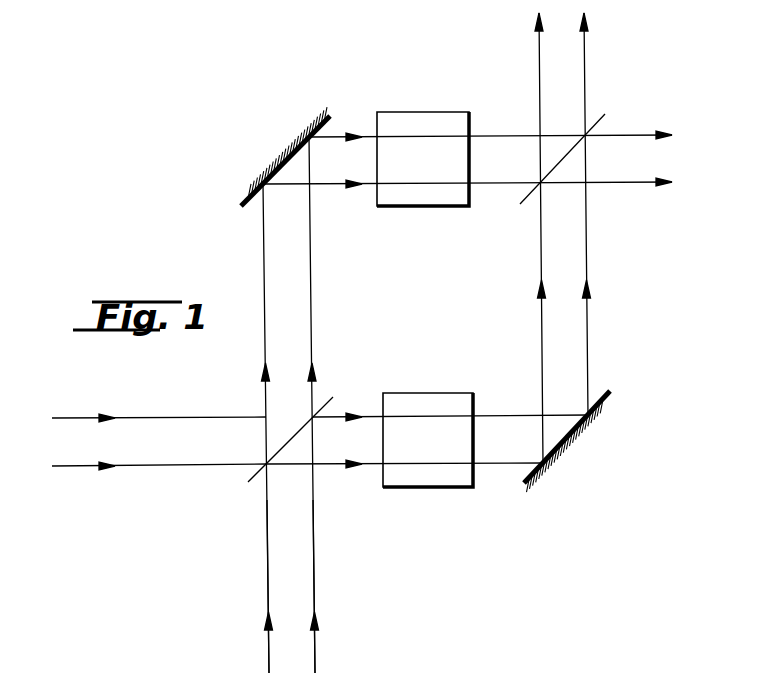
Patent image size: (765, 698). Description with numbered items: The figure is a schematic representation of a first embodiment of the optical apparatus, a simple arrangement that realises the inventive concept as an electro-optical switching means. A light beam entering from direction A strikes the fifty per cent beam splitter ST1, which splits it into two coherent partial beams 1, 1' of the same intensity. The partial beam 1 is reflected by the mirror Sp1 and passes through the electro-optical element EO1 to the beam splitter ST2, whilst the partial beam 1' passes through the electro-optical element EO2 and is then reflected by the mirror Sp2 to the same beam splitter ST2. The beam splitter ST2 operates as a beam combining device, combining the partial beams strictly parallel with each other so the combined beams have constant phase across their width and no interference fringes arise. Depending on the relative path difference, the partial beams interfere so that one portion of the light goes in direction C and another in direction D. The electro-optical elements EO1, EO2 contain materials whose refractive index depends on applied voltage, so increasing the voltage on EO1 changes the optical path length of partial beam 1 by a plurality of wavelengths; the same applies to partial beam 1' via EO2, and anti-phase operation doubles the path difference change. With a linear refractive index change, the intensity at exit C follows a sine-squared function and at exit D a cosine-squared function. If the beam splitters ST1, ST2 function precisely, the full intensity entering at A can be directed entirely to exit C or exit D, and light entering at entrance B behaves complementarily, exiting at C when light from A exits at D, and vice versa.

The partial beam 1 is at (305, 405).
The partial beam 1' is at (427, 461).
The beam splitter ST1 is at (255, 473).
The beam splitter ST2 is at (603, 118).
The mirror Sp1 is at (272, 153).
The mirror Sp2 is at (565, 445).
The electro-optical element EO1 is at (407, 125).
The electro-optical element EO2 is at (427, 482).
The entrance A is at (138, 442).
The entrance B is at (242, 599).
The exit C is at (482, 159).
The exit D is at (563, 355).